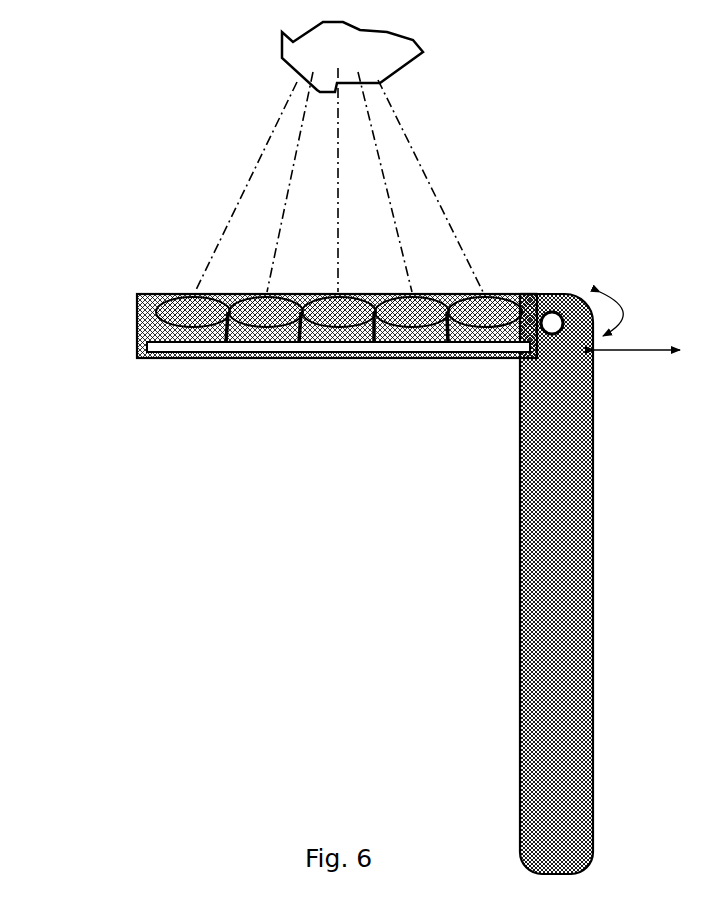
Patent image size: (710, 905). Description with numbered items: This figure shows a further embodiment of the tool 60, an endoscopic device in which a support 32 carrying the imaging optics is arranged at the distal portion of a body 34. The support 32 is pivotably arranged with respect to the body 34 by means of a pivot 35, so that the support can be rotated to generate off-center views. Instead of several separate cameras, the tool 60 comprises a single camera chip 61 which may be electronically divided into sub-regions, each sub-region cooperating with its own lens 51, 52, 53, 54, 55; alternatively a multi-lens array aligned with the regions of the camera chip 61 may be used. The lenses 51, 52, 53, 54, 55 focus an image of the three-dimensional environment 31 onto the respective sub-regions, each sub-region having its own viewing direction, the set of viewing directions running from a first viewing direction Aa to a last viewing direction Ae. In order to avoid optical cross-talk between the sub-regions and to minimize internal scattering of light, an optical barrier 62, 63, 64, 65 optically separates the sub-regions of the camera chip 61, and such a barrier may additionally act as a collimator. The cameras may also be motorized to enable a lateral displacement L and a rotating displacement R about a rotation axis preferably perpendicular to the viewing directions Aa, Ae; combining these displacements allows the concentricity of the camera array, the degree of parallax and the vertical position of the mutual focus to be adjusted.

The three-dimensional environment 31 is at (292, 52).
The support 32 is at (538, 290).
The body 34 is at (520, 730).
The pivot 35 is at (572, 295).
The lens 51 is at (137, 300).
The lens 52 is at (220, 293).
The lens 53 is at (332, 327).
The lens 54 is at (412, 327).
The lens 55 is at (483, 327).
The tool 60 is at (598, 93).
The camera chip 61 is at (167, 360).
The optical barrier 62 is at (225, 358).
The optical barrier 63 is at (297, 358).
The optical barrier 64 is at (373, 358).
The optical barrier 65 is at (447, 358).
The viewing direction Aa is at (240, 187).
The viewing direction Ae is at (417, 153).
The rotating displacement R is at (618, 297).
The lateral displacement L is at (607, 360).